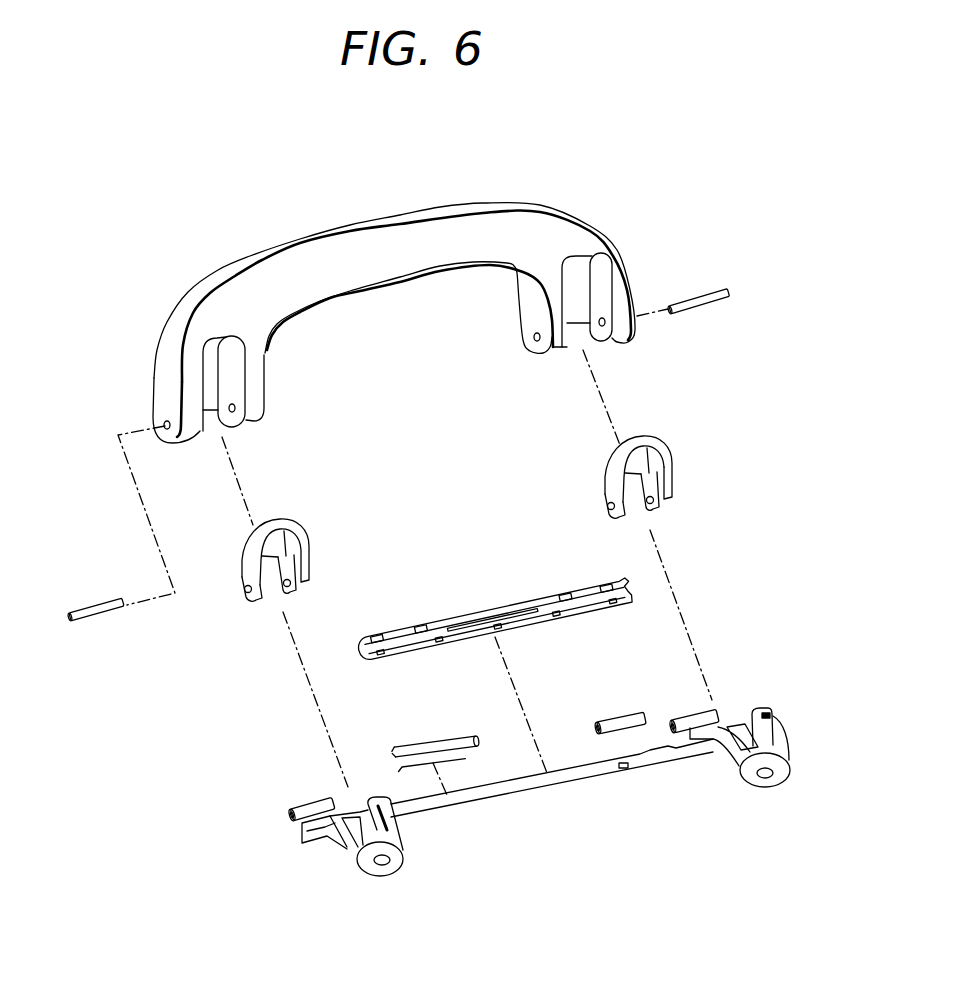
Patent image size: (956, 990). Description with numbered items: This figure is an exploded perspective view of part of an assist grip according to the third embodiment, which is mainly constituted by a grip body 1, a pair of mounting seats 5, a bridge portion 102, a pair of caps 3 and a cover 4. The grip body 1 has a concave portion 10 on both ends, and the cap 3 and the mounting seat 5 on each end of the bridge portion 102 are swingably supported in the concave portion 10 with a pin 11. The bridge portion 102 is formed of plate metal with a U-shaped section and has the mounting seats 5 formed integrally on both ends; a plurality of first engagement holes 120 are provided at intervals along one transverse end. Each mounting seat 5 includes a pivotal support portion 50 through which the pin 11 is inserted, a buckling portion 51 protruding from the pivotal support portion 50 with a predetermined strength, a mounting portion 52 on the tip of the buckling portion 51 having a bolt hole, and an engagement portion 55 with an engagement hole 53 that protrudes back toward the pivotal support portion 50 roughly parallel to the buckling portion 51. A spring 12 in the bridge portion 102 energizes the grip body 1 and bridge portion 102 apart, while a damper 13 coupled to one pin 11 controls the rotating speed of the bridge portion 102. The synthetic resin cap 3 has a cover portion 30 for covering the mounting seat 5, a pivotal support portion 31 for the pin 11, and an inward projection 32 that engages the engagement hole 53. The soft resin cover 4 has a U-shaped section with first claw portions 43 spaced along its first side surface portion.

The grip body 1 is at (394, 295).
The concave portion 10 is at (215, 353).
The pin 11 is at (703, 297).
The cap 3 is at (496, 503).
The cover portion 30 is at (613, 477).
The pivotal support portion 31 is at (657, 507).
The projection 32 is at (663, 458).
The cover 4 is at (494, 600).
The first claw portion 43 is at (462, 612).
The spring 12 is at (437, 740).
The damper 13 is at (617, 710).
The bridge portion 102 is at (552, 807).
The first engagement hole 120 is at (628, 772).
The mounting seat 5 is at (552, 800).
The pivotal support portion 50 is at (313, 805).
The buckling portion 51 is at (338, 850).
The mounting portion 52 is at (378, 874).
The engagement hole 53 is at (765, 712).
The engagement portion 55 is at (770, 728).